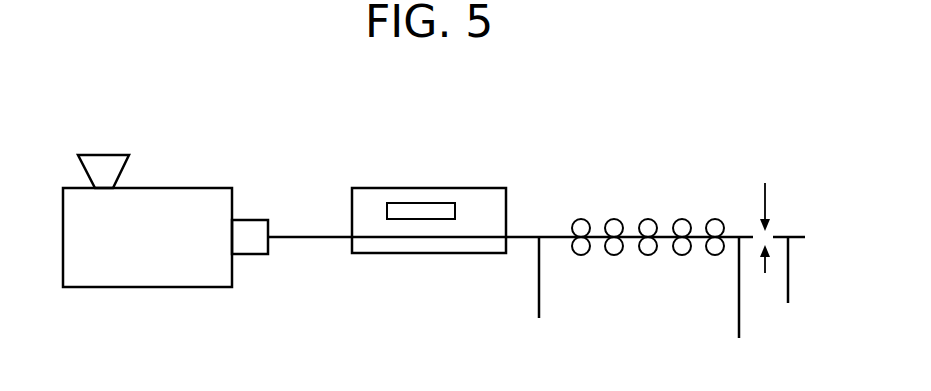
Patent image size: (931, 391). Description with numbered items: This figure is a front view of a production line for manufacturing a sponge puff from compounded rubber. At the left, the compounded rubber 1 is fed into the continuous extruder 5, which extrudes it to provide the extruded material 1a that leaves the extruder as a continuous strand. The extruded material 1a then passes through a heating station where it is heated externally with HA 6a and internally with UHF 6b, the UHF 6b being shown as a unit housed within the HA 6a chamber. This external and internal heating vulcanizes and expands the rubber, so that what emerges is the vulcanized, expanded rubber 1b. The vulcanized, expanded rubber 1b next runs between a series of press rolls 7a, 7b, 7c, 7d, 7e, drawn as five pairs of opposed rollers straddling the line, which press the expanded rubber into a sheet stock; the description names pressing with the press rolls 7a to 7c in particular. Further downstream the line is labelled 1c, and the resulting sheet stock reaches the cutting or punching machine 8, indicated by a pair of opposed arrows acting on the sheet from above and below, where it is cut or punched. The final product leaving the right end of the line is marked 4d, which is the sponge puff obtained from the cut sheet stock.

The compounded rubber 1 is at (95, 164).
The continuous extruder 5 is at (180, 205).
The extruded material 1a is at (285, 236).
The HA 6a is at (422, 253).
The UHF 6b is at (403, 203).
The vulcanized, expanded rubber 1b is at (542, 292).
The press roll 7a is at (578, 220).
The press roll 7b is at (612, 255).
The press roll 7c is at (648, 219).
The press roll 7d is at (682, 255).
The press roll 7e is at (715, 219).
The strand portion 1c is at (740, 301).
The cutting or punching machine 8 is at (764, 232).
The formed article 4d is at (794, 284).